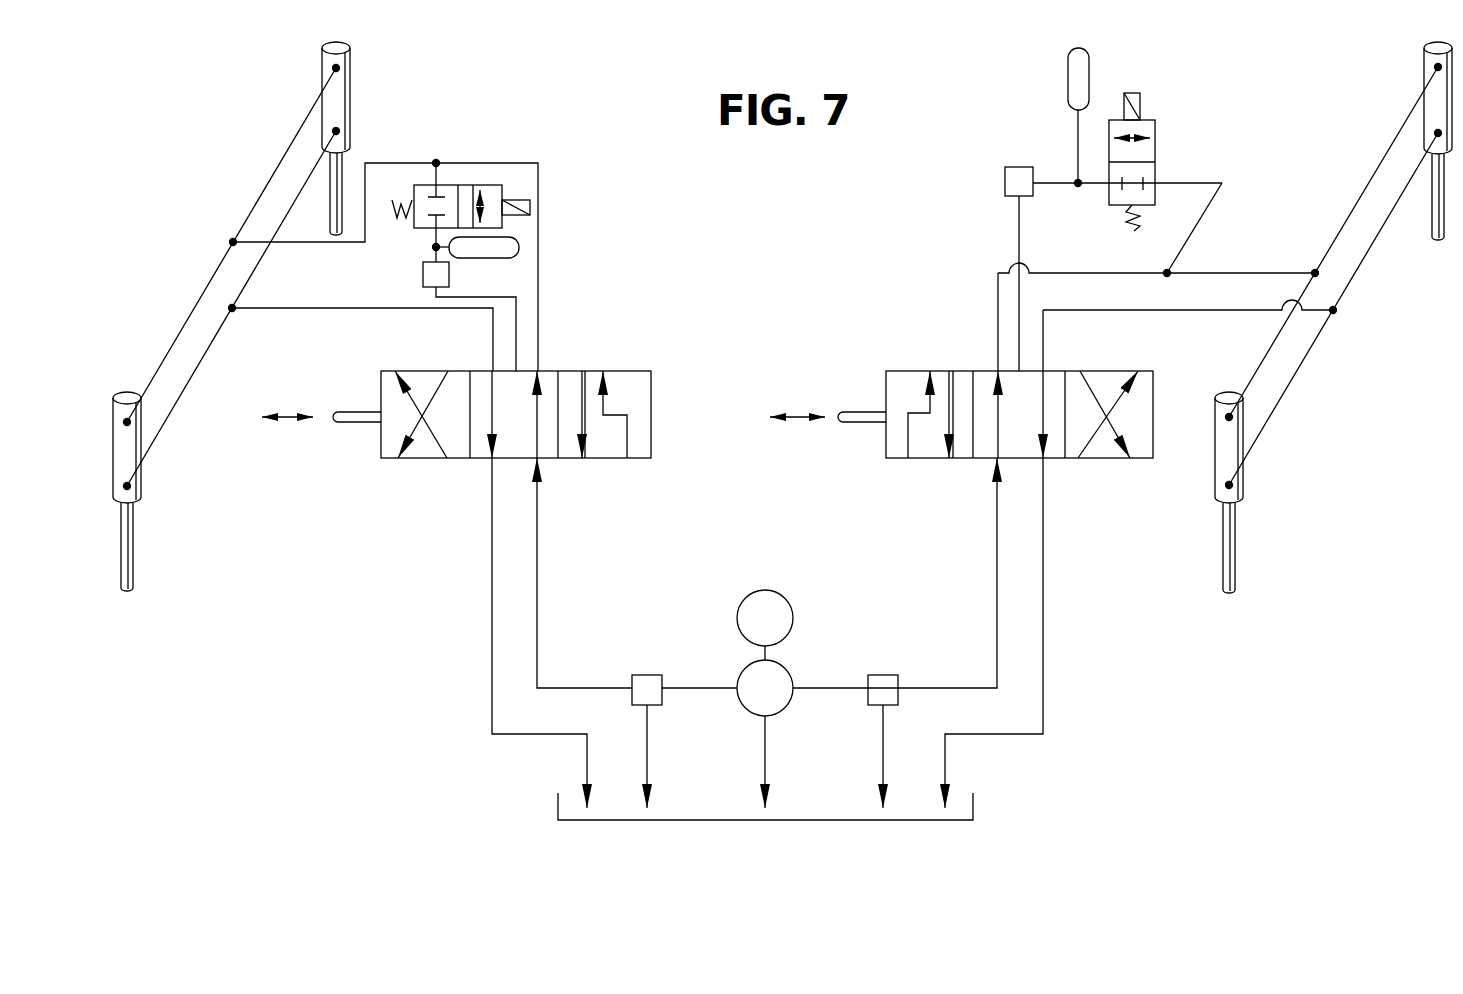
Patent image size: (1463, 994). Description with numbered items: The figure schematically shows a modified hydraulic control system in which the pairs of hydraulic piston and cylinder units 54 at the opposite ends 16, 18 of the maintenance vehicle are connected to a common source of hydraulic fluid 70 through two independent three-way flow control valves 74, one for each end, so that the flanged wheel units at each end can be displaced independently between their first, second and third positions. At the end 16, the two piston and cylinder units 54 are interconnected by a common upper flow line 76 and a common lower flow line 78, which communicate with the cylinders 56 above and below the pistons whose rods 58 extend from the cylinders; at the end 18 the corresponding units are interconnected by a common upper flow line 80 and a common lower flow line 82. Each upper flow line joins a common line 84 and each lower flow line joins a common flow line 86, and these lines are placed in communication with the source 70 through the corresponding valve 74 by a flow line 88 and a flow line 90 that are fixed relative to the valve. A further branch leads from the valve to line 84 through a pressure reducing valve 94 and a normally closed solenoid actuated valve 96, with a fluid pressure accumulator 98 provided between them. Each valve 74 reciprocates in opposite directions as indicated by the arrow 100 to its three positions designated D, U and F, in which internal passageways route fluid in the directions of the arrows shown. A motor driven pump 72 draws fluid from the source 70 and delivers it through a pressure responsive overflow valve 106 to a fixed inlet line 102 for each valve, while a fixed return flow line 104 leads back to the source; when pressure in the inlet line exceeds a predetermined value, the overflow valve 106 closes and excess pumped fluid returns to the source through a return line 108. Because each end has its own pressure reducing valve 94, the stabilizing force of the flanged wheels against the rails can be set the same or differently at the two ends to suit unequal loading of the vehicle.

The end of maintenance vehicle 16 is at (231, 277).
The end of maintenance vehicle 18 is at (1333, 276).
The piston and cylinder unit 54 is at (774, 308).
The cylinder 56 is at (342, 95).
The piston rod 58 is at (338, 166).
The source of hydraulic fluid 70 is at (755, 826).
The motor driven pump 72 is at (787, 670).
The three-way flow control valve 74 is at (422, 463).
The common upper flow line 76 is at (280, 163).
The common lower flow line 78 is at (205, 363).
The common upper flow line 80 is at (1398, 135).
The common lower flow line 82 is at (1347, 293).
The common line 84 is at (1193, 273).
The common flow line 86 is at (313, 309).
The flow line 88 is at (540, 197).
The flow line 90 is at (1045, 330).
The pressure reducing valve 94 is at (423, 271).
The normally closed solenoid actuated valve 96 is at (466, 184).
The fluid pressure accumulator 98 is at (519, 242).
The arrow 100 is at (291, 412).
The fixed inlet line 102 is at (538, 612).
The fixed return flow line 104 is at (492, 606).
The pressure responsive overflow valve 106 is at (643, 675).
The return line 108 is at (648, 735).